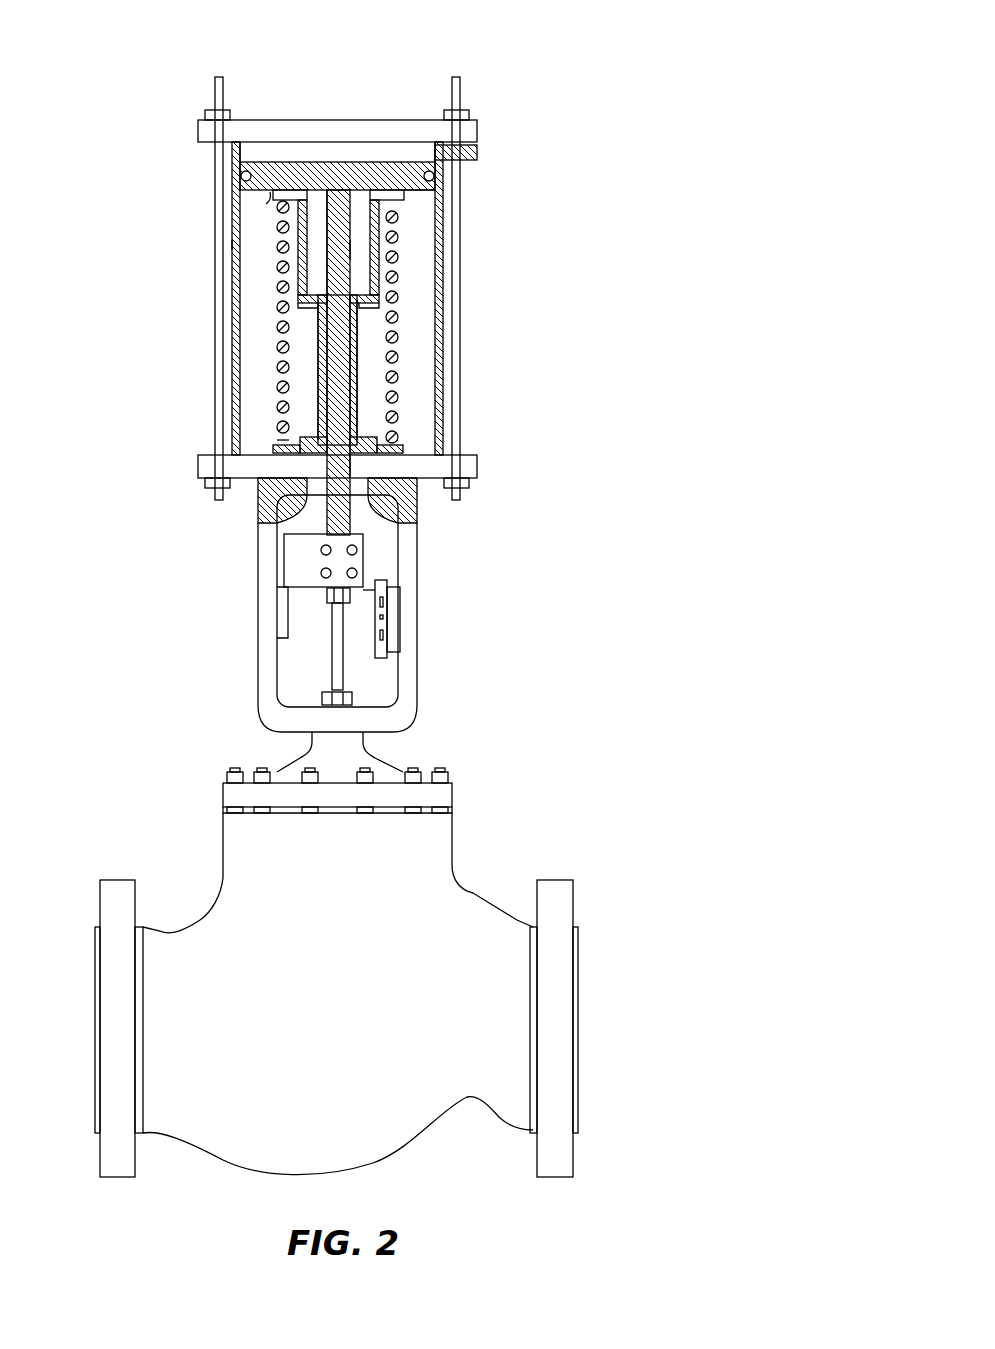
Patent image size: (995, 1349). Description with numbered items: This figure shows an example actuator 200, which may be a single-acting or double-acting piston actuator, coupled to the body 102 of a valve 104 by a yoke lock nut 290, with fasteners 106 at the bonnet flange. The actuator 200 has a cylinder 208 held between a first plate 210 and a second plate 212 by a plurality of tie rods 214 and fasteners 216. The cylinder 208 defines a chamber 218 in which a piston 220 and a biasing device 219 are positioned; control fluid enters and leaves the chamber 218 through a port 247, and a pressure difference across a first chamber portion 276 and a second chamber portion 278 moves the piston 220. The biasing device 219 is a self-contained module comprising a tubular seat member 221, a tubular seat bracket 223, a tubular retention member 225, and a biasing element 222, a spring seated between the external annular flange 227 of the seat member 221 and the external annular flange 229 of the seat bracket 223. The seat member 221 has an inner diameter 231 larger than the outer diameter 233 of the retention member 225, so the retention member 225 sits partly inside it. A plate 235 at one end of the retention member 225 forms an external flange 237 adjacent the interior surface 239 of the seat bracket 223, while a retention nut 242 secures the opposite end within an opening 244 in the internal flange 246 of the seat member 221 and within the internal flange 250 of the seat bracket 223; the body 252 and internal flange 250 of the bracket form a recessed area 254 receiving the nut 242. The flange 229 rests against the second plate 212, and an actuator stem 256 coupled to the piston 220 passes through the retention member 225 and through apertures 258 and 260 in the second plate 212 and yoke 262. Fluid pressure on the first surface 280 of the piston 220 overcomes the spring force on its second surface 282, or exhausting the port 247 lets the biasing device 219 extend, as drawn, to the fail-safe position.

The actuator 200 is at (572, 66).
The tie rods 214 is at (214, 75).
The fasteners 216 is at (205, 113).
The first plate 210 is at (391, 120).
The second plate 212 is at (199, 468).
The cylinder 208 is at (441, 385).
The first chamber portion 276 is at (248, 152).
The second chamber portion 278 is at (247, 246).
The port 247 is at (478, 152).
The piston 220 is at (304, 165).
The chamber 218 is at (250, 200).
The second surface 282 is at (268, 202).
The first surface 280 is at (350, 162).
The interior surface 239 is at (312, 210).
The outer diameter 233 is at (328, 330).
The opening 244 is at (349, 330).
The biasing element 222 is at (296, 248).
The external flange 237 is at (303, 299).
The plate 235 is at (310, 262).
The internal flange 246 is at (376, 303).
The inner diameter 231 is at (349, 262).
The external annular flange 227 is at (407, 193).
The tubular retention member 225 is at (317, 363).
The biasing device 219 is at (258, 231).
The tubular seat member 221 is at (380, 207).
The body 252 is at (297, 446).
The internal flange 250 is at (316, 436).
The retention nut 242 is at (283, 436).
The tubular seat bracket 223 is at (366, 430).
The external annular flange 229 is at (403, 450).
The aperture 258 is at (310, 462).
The aperture 260 is at (300, 496).
The recessed area 254 is at (364, 454).
The yoke 262 is at (430, 614).
The actuator stem 256 is at (333, 518).
The yoke lock nut 290 is at (326, 693).
The valve 104 is at (373, 950).
The fasteners 106 is at (233, 772).
The body 102 is at (436, 866).